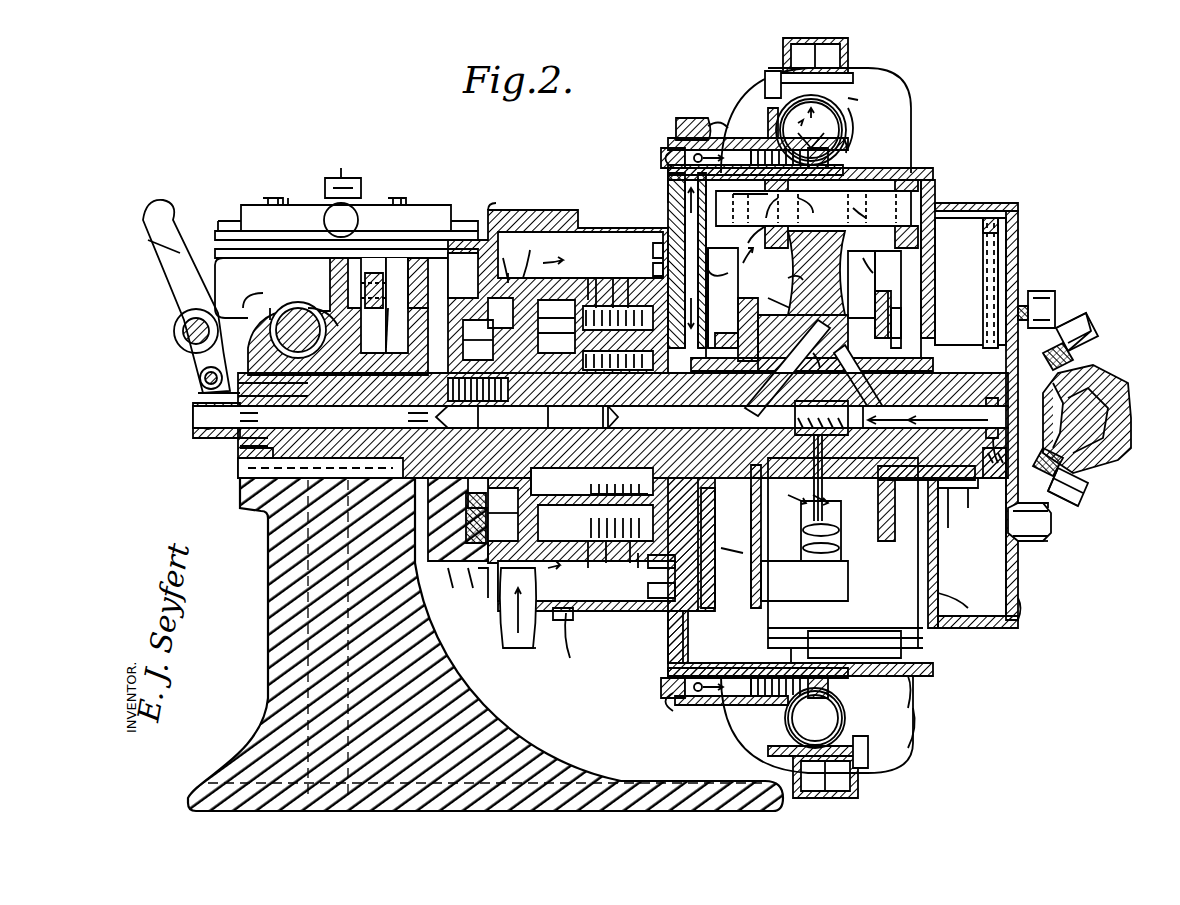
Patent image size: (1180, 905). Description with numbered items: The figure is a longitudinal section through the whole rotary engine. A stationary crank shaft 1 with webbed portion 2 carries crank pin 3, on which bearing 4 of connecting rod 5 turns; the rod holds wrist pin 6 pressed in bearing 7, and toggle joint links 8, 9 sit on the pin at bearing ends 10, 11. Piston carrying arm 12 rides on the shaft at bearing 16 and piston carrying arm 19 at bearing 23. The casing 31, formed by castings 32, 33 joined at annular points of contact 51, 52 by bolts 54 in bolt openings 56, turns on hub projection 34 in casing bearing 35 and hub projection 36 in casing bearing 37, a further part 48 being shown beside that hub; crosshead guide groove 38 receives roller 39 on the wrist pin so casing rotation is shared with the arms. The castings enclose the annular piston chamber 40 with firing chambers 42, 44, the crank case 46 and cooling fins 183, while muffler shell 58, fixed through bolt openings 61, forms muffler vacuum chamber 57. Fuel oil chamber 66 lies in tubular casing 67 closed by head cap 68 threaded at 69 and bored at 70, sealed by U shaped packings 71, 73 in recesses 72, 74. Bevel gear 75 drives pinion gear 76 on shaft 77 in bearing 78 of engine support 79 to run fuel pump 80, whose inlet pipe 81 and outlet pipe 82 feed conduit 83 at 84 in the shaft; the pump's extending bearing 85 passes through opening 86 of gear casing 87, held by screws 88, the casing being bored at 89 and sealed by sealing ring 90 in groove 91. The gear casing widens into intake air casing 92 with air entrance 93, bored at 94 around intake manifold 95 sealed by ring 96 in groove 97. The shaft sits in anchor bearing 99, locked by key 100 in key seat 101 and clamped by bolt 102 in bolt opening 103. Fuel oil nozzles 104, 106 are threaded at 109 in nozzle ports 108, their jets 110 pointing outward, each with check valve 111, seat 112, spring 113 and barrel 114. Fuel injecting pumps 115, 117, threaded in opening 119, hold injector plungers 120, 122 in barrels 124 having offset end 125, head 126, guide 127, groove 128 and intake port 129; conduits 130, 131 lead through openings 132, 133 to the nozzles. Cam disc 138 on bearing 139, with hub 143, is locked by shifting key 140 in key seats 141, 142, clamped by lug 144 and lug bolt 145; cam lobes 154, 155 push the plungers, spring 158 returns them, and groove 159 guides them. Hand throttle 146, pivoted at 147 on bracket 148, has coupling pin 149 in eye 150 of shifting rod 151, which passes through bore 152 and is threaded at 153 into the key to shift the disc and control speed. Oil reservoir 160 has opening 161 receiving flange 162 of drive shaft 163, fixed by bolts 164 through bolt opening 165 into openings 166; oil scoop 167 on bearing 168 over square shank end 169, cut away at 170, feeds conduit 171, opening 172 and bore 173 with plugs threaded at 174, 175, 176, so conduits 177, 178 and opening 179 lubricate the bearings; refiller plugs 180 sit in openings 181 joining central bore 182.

The stationary crank shaft 1 is at (794, 510).
The webbed portion 2 is at (778, 300).
The crank pin 3 is at (813, 430).
The bearing 4 is at (813, 435).
The connecting rod 5 is at (782, 280).
The wrist pin 6 is at (757, 240).
The bearing 7 is at (806, 202).
The toggle joint link 8 is at (862, 268).
The toggle joint link 9 is at (749, 258).
The bearing end 10 is at (858, 205).
The bearing end 11 is at (778, 211).
The piston carrying arm 12 is at (885, 285).
The bearing 16 is at (950, 490).
The piston carrying arm 19 is at (718, 580).
The bearing 23 is at (740, 490).
The casing 31 is at (905, 683).
The casting 32 is at (928, 665).
The casting 33 is at (790, 725).
The hub projection portion 34 is at (935, 505).
The casing bearing 35 is at (930, 530).
The hub projection 36 is at (740, 505).
The casing bearing 37 is at (740, 497).
The radial crosshead guide groove 38 is at (718, 273).
The roller 39 is at (750, 202).
The cylindrical annular piston chamber 40 is at (845, 105).
The firing chamber 42 is at (842, 92).
The firing chamber 44 is at (840, 720).
The crank case 46 is at (912, 580).
The ball 48 is at (818, 518).
The annular point of contact 51 is at (840, 628).
The annular point of contact 52 is at (852, 770).
The bolts 54 is at (758, 75).
The bolt openings 56 is at (840, 45).
The muffler vacuum chamber 57 is at (845, 62).
The muffler shell 58 is at (775, 62).
The bolt openings 61 is at (888, 76).
The fuel oil chamber 66 is at (508, 265).
The tubular shaped casing 67 is at (532, 257).
The head cap 68 is at (462, 232).
The thread 69 is at (490, 320).
The bore 70 is at (410, 408).
The U shaped packing 71 is at (415, 522).
The recess 72 is at (478, 518).
The U shaped packing 73 is at (635, 466).
The recess 74 is at (632, 360).
The bevel gear 75 is at (320, 466).
The pinion gear 76 is at (295, 300).
The shaft 77 is at (325, 300).
The bearing 78 is at (365, 345).
The engine support 79 is at (260, 600).
The fuel pump 80 is at (235, 196).
The inlet pipe 81 is at (318, 170).
The outlet pipe 82 is at (212, 255).
The conduit 83 is at (190, 420).
The connection point 84 is at (240, 445).
The extending bearing 85 is at (362, 285).
The opening 86 is at (362, 250).
The gear casing 87 is at (412, 252).
The screws 88 is at (485, 200).
The bore 89 is at (235, 434).
The sealing ring 90 is at (445, 585).
The groove 91 is at (468, 575).
The intake air casing 92 is at (480, 590).
The air entrance 93 is at (508, 640).
The bore 94 is at (530, 640).
The intake manifold 95 is at (660, 245).
The sealing ring 96 is at (558, 640).
The groove 97 is at (568, 608).
The anchor bearing 99 is at (385, 340).
The key 100 is at (240, 463).
The key seat 101 is at (240, 455).
The bolt 102 is at (262, 300).
The bolt opening 103 is at (270, 318).
The fuel oil nozzle 104 is at (668, 120).
The fuel oil nozzle 106 is at (672, 698).
The nozzle port 108 is at (715, 128).
The thread 109 is at (695, 120).
The discharging jet 110 is at (838, 122).
The check valve 111 is at (840, 137).
The seat 112 is at (818, 413).
The spring 113 is at (756, 110).
The barrel 114 is at (655, 147).
The fuel injecting pump 115 is at (592, 295).
The fuel injecting pump 117 is at (628, 560).
The opening 119 is at (645, 262).
The injector plunger 120 is at (606, 272).
The injector plunger 122 is at (598, 550).
The barrel 124 is at (624, 295).
The offset end 125 is at (575, 352).
The head 126 is at (557, 317).
The guide 127 is at (580, 272).
The groove 128 is at (742, 530).
The intake port 129 is at (645, 242).
The conduit 130 is at (726, 298).
The conduit 131 is at (726, 554).
The opening 132 is at (662, 185).
The opening 133 is at (672, 660).
The cam disc 138 is at (521, 608).
The bearing 139 is at (507, 494).
The shifting key 140 is at (580, 425).
The key seat 141 is at (405, 407).
The key seat 142 is at (485, 357).
The hub 143 is at (507, 509).
The lug 144 is at (482, 336).
The lug bolt 145 is at (482, 324).
The hand throttle 146 is at (150, 196).
The pivot 147 is at (175, 327).
The bracket 148 is at (167, 318).
The coupling pin 149 is at (192, 365).
The eye 150 is at (197, 375).
The shifting rod 151 is at (200, 390).
The bore 152 is at (335, 412).
The thread 153 is at (476, 398).
The cam lobe 154 is at (557, 304).
The cam lobe 155 is at (507, 527).
The spring 158 is at (572, 322).
The groove 159 is at (550, 272).
The oil reservoir 160 is at (1012, 605).
The opening 161 is at (1046, 522).
The flange 162 is at (1050, 495).
The drive shaft 163 is at (1090, 368).
The bolts 164 is at (1040, 528).
The bolt opening 165 is at (1035, 540).
The openings 166 is at (995, 538).
The oil scoop 167 is at (1012, 258).
The bearing 168 is at (985, 470).
The square shank end 169 is at (992, 435).
The cut away 170 is at (992, 218).
The conduit 171 is at (992, 236).
The opening 172 is at (990, 395).
The bore 173 is at (970, 395).
The threaded plug location 174 is at (995, 424).
The threaded plug location 175 is at (910, 503).
The threaded plug location 176 is at (768, 475).
The conduit 177 is at (915, 328).
The conduit 178 is at (800, 420).
The opening 179 is at (726, 341).
The reservoir refiller plug 180 is at (1075, 330).
The openings 181 is at (1100, 390).
The central bore 182 is at (1100, 410).
The fins 183 is at (908, 720).